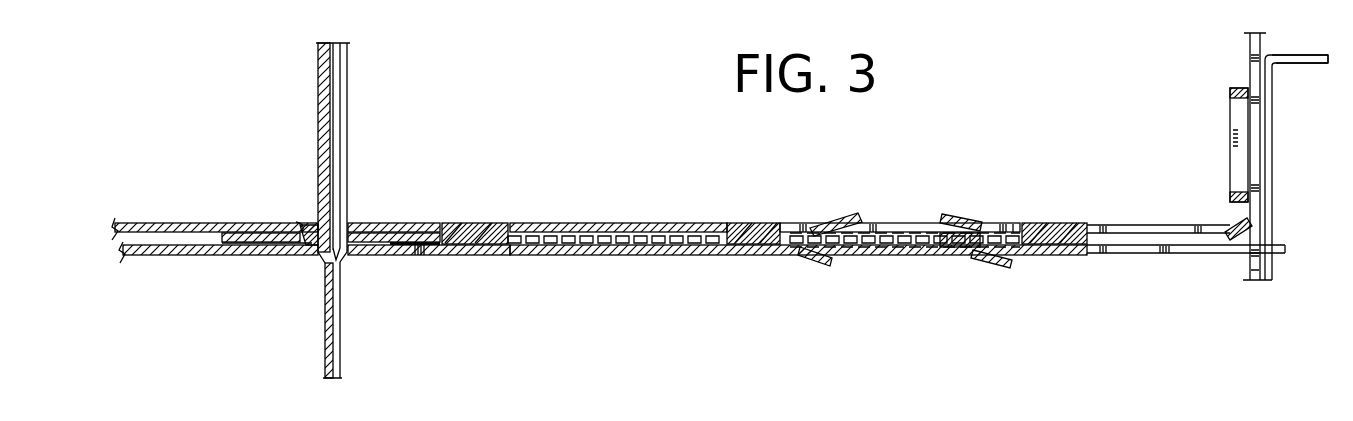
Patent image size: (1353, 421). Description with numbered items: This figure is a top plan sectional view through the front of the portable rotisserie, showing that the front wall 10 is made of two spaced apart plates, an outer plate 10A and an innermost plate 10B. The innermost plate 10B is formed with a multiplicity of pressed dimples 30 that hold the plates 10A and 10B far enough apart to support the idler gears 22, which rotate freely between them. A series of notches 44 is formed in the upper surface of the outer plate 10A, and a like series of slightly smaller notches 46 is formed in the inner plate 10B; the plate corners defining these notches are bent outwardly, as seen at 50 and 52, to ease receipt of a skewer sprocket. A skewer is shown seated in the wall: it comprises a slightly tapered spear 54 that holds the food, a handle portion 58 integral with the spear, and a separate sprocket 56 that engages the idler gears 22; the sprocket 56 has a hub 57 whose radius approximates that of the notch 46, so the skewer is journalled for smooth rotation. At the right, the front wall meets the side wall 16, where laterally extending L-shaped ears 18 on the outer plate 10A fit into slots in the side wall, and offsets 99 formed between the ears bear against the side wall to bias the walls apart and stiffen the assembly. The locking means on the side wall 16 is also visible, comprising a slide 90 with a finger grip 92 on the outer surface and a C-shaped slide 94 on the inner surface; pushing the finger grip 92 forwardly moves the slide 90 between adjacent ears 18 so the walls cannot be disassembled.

The front wall 10 is at (671, 251).
The outer plate 10A is at (483, 257).
The innermost plate 10B is at (598, 223).
The side wall 16 is at (1250, 45).
The L-shaped ears 18 is at (1287, 248).
The idler gears 22 is at (622, 255).
The pressed dimples 30 is at (485, 223).
The notches 44 is at (265, 257).
The notches 46 is at (302, 222).
The bent corners 50 is at (815, 260).
The bent corners 52 is at (850, 215).
The spear 54 is at (345, 98).
The sprocket 56 is at (435, 255).
The hub 57 is at (360, 223).
The handle portion 58 is at (340, 345).
The slide 90 is at (1284, 138).
The finger grip 92 is at (1288, 58).
The C-shaped slide 94 is at (1230, 103).
The offsets 99 is at (1226, 228).